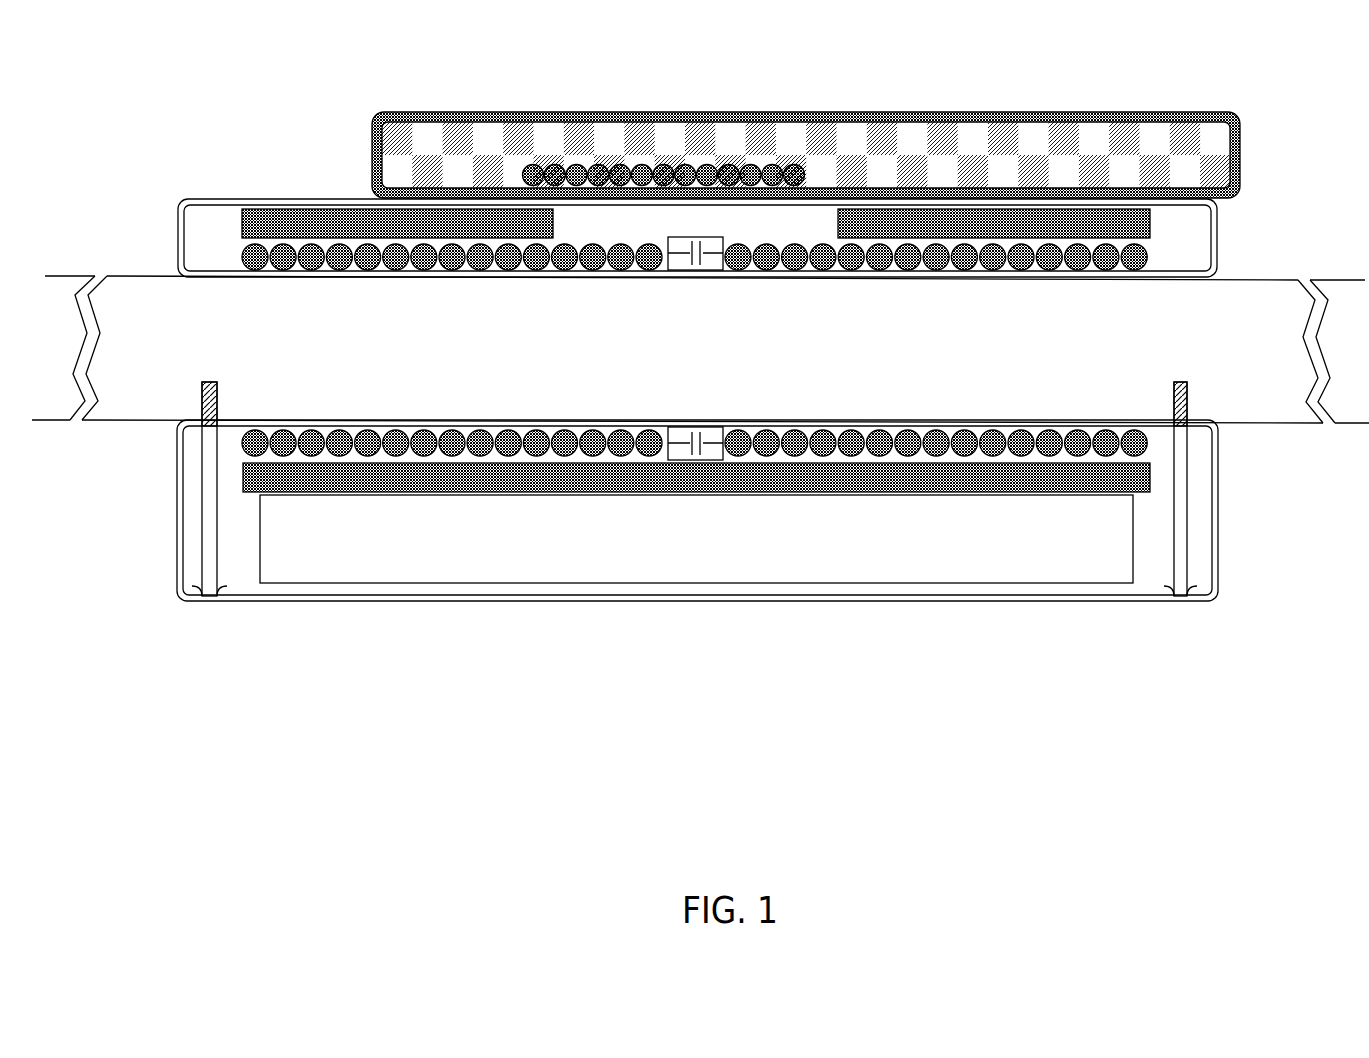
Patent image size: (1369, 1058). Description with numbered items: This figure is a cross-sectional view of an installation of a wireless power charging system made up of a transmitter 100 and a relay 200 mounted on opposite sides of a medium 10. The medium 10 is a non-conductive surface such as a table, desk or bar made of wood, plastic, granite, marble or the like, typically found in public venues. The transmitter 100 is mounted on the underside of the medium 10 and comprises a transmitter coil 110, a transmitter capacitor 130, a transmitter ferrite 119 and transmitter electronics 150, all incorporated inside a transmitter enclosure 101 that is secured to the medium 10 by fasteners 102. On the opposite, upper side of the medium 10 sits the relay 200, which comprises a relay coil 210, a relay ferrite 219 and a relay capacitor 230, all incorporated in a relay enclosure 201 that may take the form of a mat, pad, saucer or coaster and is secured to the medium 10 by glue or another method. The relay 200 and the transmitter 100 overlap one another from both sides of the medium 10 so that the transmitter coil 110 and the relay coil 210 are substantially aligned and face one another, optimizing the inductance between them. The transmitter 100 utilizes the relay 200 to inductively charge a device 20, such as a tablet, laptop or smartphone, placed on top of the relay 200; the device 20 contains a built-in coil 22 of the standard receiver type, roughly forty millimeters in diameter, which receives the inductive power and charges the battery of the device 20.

The medium 10 is at (102, 424).
The device 20 is at (806, 109).
The built-in coil 22 is at (735, 163).
The transmitter 100 is at (677, 511).
The transmitter enclosure 101 is at (177, 537).
The fasteners 102 is at (212, 597).
The transmitter coil 110 is at (582, 420).
The transmitter ferrite 119 is at (1150, 487).
The transmitter capacitor 130 is at (718, 427).
The transmitter electronics 150 is at (470, 584).
The relay 200 is at (651, 237).
The relay enclosure 201 is at (272, 198).
The relay coil 210 is at (415, 278).
The relay ferrite 219 is at (338, 208).
The relay capacitor 230 is at (672, 272).